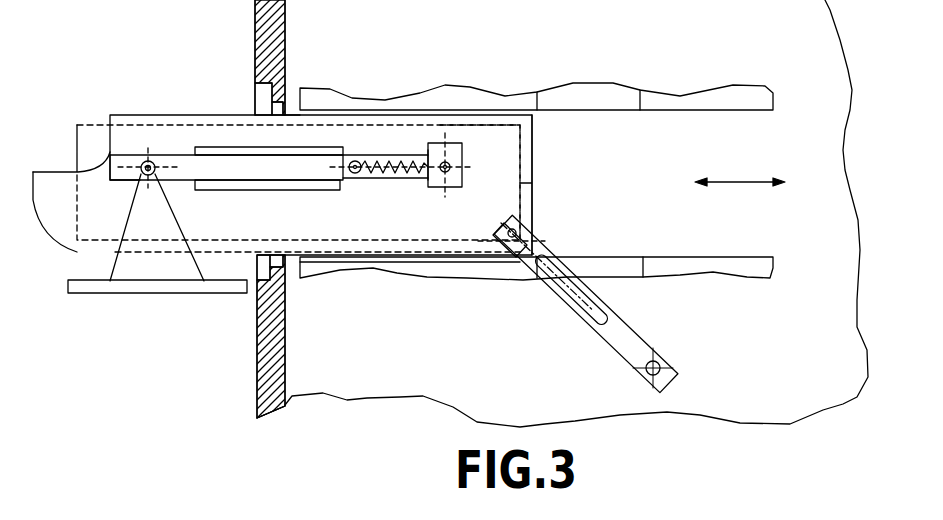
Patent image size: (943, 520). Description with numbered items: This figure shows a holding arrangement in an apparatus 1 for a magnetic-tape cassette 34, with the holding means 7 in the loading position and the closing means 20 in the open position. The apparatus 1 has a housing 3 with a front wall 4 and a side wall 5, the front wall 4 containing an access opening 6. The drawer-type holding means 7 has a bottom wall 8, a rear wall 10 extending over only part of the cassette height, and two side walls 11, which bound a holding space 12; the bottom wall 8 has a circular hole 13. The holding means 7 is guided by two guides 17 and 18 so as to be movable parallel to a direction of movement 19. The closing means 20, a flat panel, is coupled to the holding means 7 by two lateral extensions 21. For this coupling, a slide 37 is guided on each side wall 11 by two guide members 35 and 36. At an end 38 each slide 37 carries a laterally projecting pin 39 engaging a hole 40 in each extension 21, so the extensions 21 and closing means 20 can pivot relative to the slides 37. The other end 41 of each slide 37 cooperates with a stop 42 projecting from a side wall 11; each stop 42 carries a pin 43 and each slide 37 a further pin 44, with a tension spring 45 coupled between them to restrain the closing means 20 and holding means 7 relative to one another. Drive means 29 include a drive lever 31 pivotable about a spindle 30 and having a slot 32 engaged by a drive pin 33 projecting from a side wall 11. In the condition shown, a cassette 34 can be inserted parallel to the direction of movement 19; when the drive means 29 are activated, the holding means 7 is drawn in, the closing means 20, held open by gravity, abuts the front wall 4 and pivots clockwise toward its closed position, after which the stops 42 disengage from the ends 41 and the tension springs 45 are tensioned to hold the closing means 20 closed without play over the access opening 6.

The apparatus 1 is at (417, 447).
The housing 3 is at (288, 416).
The front wall 4 is at (268, 345).
The side wall 5 is at (346, 397).
The access opening 6 is at (260, 92).
The holding means 7 is at (547, 138).
The bottom wall 8 is at (443, 258).
The rear wall 10 is at (534, 190).
The side wall 11 is at (500, 140).
The holding space 12 is at (477, 130).
The circular hole 13 is at (358, 258).
The guide 17 is at (698, 100).
The guide 18 is at (728, 272).
The direction of movement 19 is at (743, 182).
The closing means 20 is at (93, 292).
The lateral extension 21 is at (123, 268).
The drive means 29 is at (688, 355).
The spindle 30 is at (645, 374).
The drive lever 31 is at (628, 335).
The slot 32 is at (577, 297).
The drive pin 33 is at (510, 228).
The magnetic-tape cassette 34 is at (80, 137).
The guide member 35 is at (292, 150).
The guide member 36 is at (273, 188).
The slide 37 is at (227, 165).
The end 38 is at (122, 177).
The pin 39 is at (145, 160).
The hole 40 is at (153, 157).
The other end 41 is at (423, 158).
The stop 42 is at (453, 148).
The pin 43 is at (446, 178).
The further pin 44 is at (362, 175).
The tension spring 45 is at (402, 173).